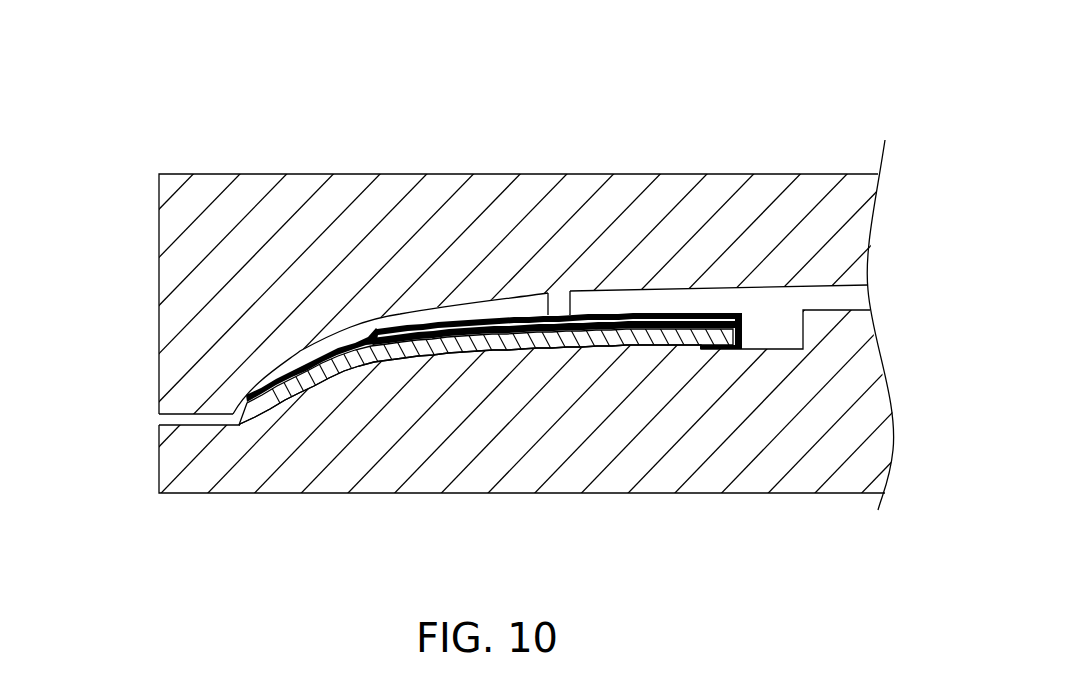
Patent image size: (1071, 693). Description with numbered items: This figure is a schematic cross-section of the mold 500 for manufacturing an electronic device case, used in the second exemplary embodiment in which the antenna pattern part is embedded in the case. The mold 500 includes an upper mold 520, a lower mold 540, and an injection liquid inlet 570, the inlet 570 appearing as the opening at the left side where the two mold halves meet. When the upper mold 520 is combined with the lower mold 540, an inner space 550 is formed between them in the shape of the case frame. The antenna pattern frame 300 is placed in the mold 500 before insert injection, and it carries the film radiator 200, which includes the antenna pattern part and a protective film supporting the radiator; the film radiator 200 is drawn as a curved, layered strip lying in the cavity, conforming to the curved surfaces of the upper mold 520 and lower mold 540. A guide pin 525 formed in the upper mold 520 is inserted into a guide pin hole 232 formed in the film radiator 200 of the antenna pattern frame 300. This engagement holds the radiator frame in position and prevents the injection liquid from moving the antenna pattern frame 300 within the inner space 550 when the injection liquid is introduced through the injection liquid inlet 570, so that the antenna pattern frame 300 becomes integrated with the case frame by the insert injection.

The mold 500 is at (667, 37).
The upper mold 520 is at (436, 188).
The lower mold 540 is at (386, 480).
The guide pin 525 is at (562, 307).
The inner space 550 is at (668, 296).
The injection liquid inlet 570 is at (164, 421).
The film radiator 200 is at (455, 326).
The guide pin hole 232 is at (555, 330).
The antenna pattern frame 300 is at (657, 342).